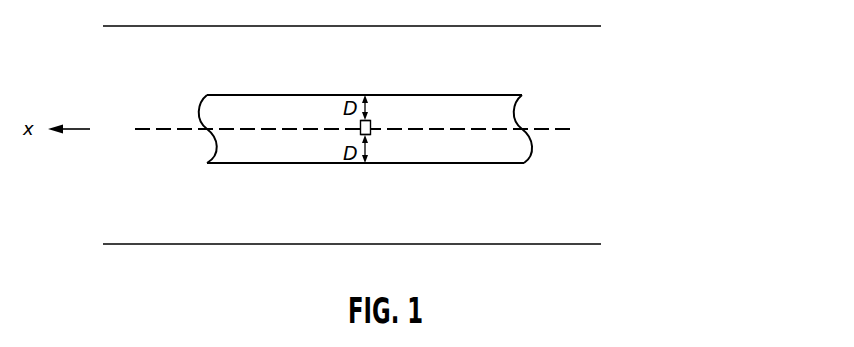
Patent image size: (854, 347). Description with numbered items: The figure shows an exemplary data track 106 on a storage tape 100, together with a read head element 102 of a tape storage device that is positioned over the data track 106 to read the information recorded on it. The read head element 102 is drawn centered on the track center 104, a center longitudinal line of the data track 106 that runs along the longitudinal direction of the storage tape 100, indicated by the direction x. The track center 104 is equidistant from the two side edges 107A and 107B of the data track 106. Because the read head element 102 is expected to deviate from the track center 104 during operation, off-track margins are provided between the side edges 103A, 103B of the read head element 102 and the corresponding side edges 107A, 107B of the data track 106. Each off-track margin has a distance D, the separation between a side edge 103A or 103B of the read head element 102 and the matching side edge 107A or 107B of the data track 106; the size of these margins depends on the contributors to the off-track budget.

The storage tape 100 is at (469, 131).
The read head element 102 is at (412, 156).
The side edge of the read head element 103A is at (419, 174).
The side edge of the read head element 103B is at (414, 83).
The track center 104 is at (383, 109).
The data track 106 is at (365, 114).
The side edge of the data track 107A is at (365, 184).
The side edge of the data track 107B is at (364, 76).